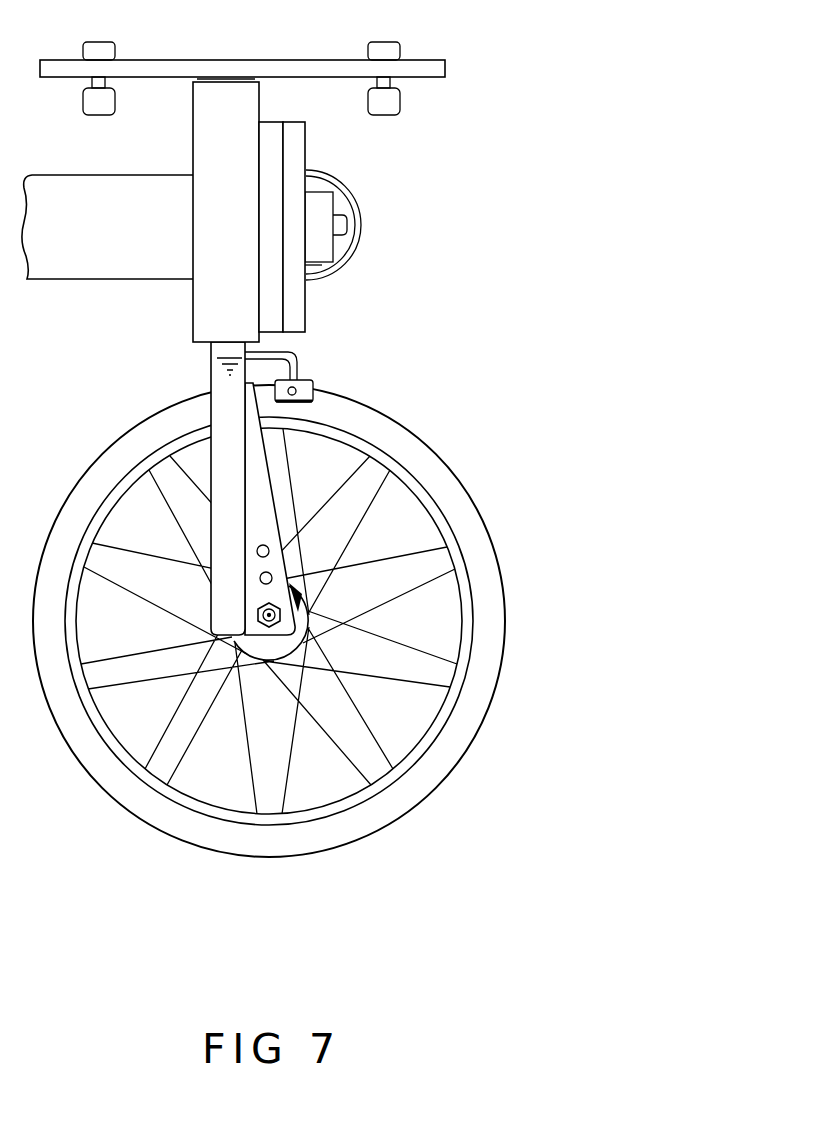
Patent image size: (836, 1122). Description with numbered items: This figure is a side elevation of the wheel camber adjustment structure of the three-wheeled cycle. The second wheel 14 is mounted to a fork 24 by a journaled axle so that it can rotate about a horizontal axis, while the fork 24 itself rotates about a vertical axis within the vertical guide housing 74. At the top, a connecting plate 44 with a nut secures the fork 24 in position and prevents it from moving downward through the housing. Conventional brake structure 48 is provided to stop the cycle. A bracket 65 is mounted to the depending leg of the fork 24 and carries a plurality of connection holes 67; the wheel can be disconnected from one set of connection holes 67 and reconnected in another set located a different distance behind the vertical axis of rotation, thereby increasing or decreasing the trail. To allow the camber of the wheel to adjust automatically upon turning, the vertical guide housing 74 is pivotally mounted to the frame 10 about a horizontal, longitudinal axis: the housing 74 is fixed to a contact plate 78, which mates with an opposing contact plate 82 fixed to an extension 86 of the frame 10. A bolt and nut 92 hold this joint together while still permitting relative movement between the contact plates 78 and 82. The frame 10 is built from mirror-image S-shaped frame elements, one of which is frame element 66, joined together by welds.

The frame 10 is at (107, 284).
The second wheel 14 is at (442, 789).
The fork 24 is at (210, 412).
The connecting plate 44 is at (422, 60).
The brake structure 48 is at (300, 370).
The bracket 65 is at (270, 486).
The connection holes 67 is at (272, 571).
The vertical guide housing 74 is at (205, 156).
The contact plate 78 is at (273, 122).
The contact plate 82 is at (298, 150).
The extension 86 is at (334, 203).
The nut 92 is at (347, 245).
The frame element 66 is at (331, 275).